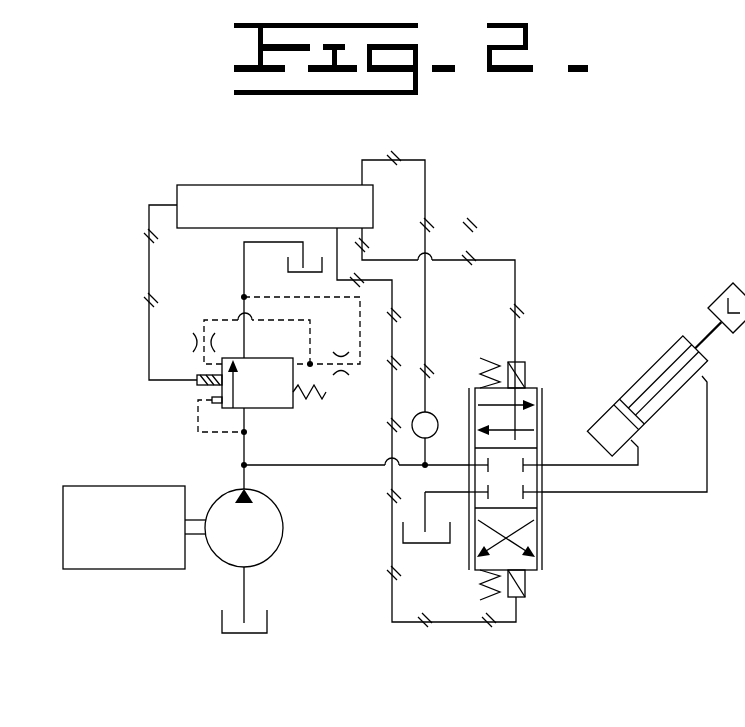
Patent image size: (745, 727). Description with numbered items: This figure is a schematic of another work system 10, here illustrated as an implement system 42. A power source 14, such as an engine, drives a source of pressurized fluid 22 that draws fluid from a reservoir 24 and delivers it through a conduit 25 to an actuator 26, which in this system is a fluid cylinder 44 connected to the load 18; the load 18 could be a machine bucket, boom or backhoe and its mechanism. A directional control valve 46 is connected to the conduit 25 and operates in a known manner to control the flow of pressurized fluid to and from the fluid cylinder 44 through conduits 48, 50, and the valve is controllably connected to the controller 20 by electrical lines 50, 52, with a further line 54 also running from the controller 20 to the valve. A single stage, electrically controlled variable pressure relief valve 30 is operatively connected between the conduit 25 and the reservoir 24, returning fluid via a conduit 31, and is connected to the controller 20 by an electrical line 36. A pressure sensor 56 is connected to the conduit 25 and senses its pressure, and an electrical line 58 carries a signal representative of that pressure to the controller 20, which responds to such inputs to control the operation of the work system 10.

The work system 10 is at (166, 156).
The power source 14 is at (157, 486).
The load 18 is at (706, 273).
The controller 20 is at (260, 185).
The source of pressurized fluid 22 is at (257, 539).
The reservoir 24 is at (298, 271).
The conduit 25 is at (295, 466).
The actuator 26 is at (640, 373).
The variable pressure relief valve assembly 30 is at (154, 409).
The conduit 31 is at (244, 262).
The control signal line 36 is at (149, 280).
The implement system 42 is at (551, 514).
The fluid cylinder 44 is at (643, 372).
The directional control valve 46 is at (537, 598).
The conduit 48 is at (558, 465).
The conduit 50 is at (557, 492).
The electrical line 52 is at (515, 272).
The control signal line 54 is at (392, 450).
The pressure sensor 56 is at (440, 412).
The electrical line 58 is at (425, 195).